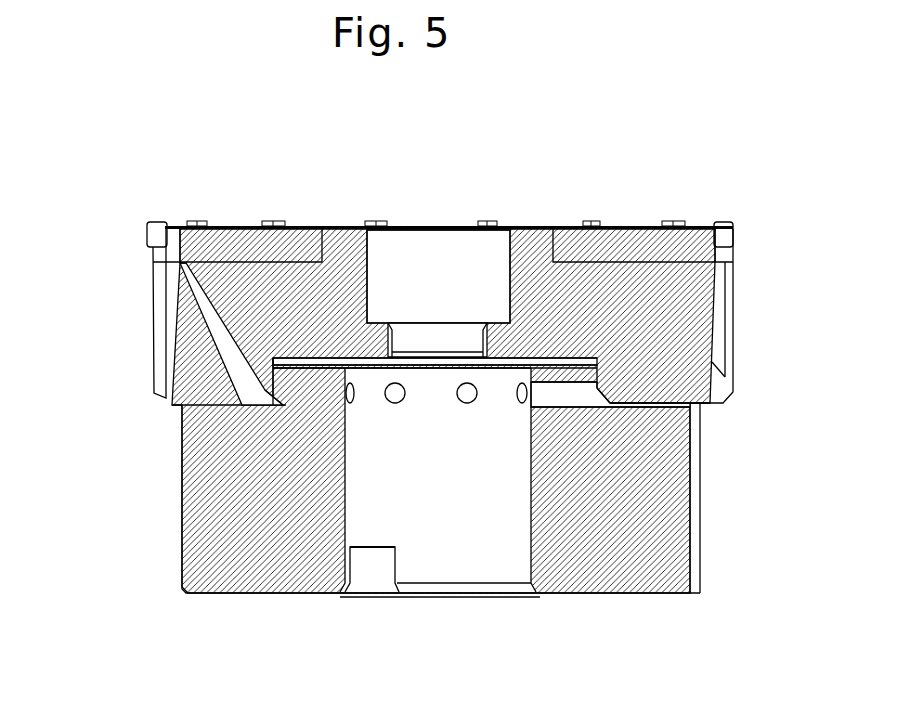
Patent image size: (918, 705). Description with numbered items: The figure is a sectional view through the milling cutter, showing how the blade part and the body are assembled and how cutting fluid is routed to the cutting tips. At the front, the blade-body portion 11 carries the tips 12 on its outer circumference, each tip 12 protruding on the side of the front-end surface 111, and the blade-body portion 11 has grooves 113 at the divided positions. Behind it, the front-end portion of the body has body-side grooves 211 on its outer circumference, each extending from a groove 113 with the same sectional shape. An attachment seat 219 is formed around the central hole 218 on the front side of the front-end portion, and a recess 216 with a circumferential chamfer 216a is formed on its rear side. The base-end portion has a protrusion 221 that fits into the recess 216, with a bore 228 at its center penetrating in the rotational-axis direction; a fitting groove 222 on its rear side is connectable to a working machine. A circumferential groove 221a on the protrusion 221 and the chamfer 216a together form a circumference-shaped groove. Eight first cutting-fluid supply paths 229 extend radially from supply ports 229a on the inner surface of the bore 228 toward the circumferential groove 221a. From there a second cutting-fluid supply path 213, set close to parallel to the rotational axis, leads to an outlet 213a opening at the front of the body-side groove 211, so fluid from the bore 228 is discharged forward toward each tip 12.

The blade-body portion 11 is at (627, 240).
The front-end surface 111 is at (702, 230).
The groove 113 is at (173, 236).
The tip 12 is at (152, 228).
The body-side groove 211 is at (168, 345).
The second cutting-fluid supply path 213 is at (213, 342).
The outlet 213a is at (181, 276).
The recess 216 is at (308, 366).
The chamfer 216a is at (262, 402).
The central hole 218 is at (467, 286).
The attachment seat 219 is at (525, 242).
The protrusion 221 is at (310, 372).
The circumferential groove 221a is at (284, 405).
The fitting groove 222 is at (370, 567).
The bore 228 is at (468, 508).
The first cutting-fluid supply path 229 is at (552, 392).
The supply port 229a is at (467, 397).